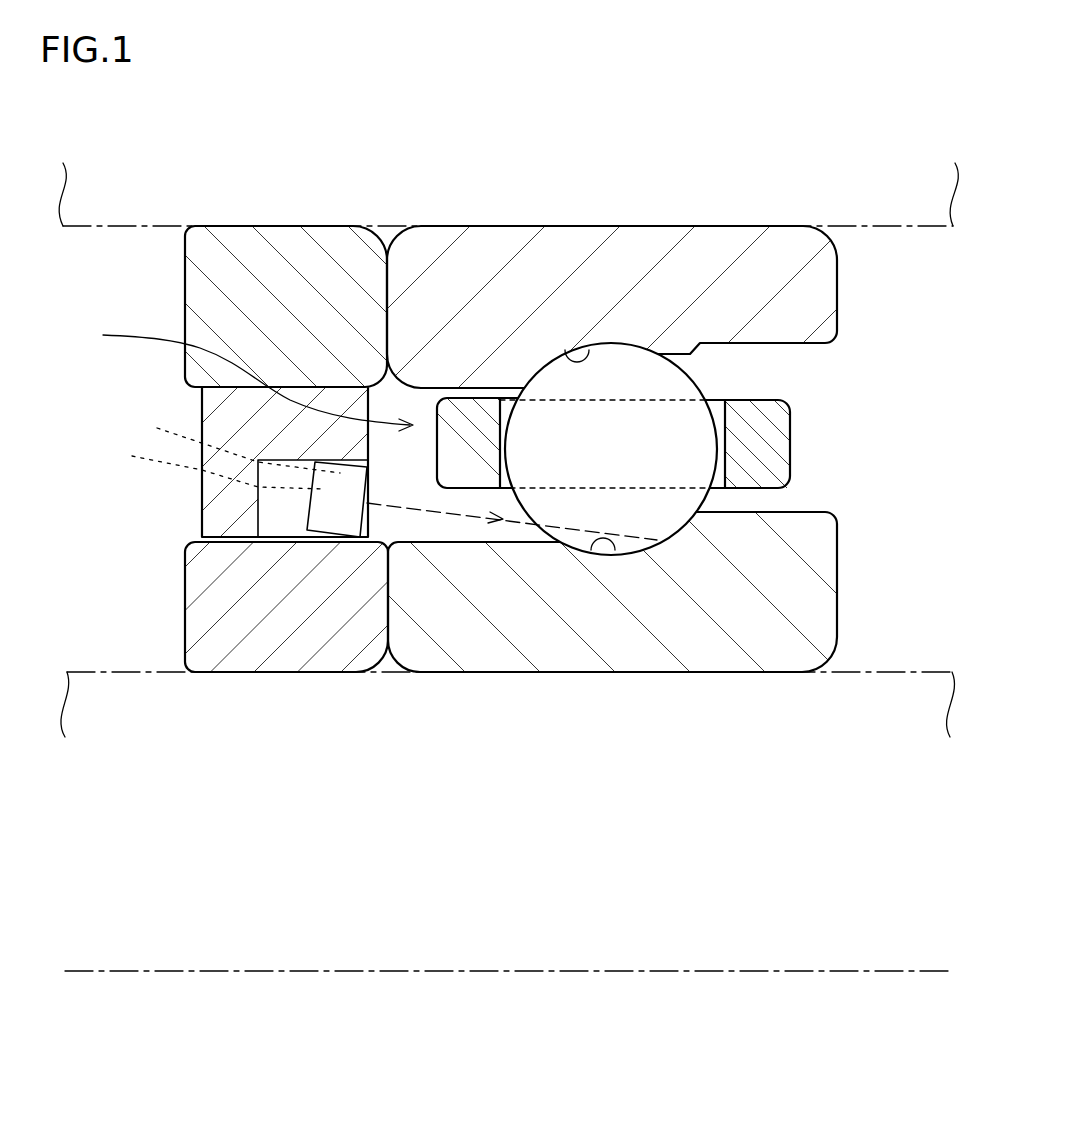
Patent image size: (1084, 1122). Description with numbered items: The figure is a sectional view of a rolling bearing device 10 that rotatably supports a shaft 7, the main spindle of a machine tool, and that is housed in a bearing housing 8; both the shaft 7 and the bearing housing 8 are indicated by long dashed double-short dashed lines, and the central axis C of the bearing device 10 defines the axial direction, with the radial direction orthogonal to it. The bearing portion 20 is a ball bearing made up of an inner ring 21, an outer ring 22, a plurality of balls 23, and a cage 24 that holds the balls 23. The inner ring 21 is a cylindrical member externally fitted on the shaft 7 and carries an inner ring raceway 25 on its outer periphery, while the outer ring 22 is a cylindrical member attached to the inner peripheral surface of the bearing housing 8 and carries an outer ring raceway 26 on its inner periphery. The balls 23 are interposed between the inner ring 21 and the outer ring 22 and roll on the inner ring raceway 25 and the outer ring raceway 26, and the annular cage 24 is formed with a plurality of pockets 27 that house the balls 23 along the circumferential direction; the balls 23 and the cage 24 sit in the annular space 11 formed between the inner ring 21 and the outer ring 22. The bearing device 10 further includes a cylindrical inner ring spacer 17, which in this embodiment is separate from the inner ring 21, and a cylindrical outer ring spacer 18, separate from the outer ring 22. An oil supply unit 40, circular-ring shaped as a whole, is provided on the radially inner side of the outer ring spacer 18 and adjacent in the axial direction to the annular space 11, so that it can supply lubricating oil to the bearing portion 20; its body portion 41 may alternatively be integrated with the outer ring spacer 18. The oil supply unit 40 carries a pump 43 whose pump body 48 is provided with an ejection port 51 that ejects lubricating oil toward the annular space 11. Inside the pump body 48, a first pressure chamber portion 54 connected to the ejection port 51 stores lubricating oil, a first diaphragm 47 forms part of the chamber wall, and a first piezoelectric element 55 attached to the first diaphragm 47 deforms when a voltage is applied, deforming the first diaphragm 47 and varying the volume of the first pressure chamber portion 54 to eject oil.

The shaft 7 is at (98, 672).
The bearing housing 8 is at (93, 226).
The rolling bearing device 10 is at (542, 391).
The annular space 11 is at (239, 370).
The inner ring spacer 17 is at (305, 655).
The outer ring spacer 18 is at (290, 240).
The bearing portion 20 is at (542, 508).
The inner ring 21 is at (635, 655).
The outer ring 22 is at (627, 250).
The ball 23 is at (688, 404).
The cage 24 is at (790, 457).
The inner ring raceway 25 is at (592, 562).
The outer ring raceway 26 is at (567, 352).
The pocket 27 is at (713, 493).
The oil supply unit 40 is at (267, 563).
The body portion 41 is at (213, 408).
The pump 43 is at (310, 506).
The first diaphragm 47 is at (230, 444).
The pump body 48 is at (348, 512).
The ejection port 51 is at (367, 505).
The first pressure chamber portion 54 is at (210, 468).
The first piezoelectric element 55 is at (300, 525).
The central axis C is at (828, 971).